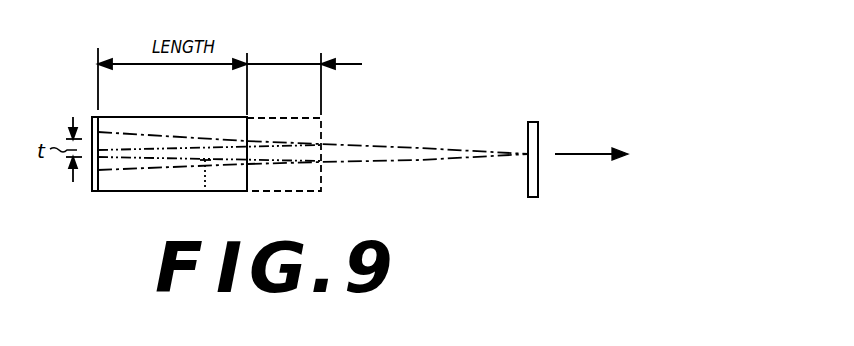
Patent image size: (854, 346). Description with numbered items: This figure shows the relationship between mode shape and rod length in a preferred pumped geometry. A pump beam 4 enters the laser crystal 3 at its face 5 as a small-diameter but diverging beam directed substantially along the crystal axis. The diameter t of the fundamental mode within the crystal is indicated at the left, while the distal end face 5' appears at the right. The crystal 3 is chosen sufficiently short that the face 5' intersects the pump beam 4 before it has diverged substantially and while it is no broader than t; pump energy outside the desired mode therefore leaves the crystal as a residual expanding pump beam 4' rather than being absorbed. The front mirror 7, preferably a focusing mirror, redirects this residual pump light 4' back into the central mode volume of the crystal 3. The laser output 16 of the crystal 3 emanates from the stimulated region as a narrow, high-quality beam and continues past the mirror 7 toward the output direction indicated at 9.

The laser crystal 3 is at (128, 191).
The pump beam 4 is at (196, 190).
The residual expanding pump beam 4' is at (320, 183).
The face 5 is at (77, 137).
The distal end face of the crystal 5' is at (284, 139).
The front mirror 7 is at (537, 122).
The output beam 9 is at (600, 156).
The laser output 16 is at (389, 159).